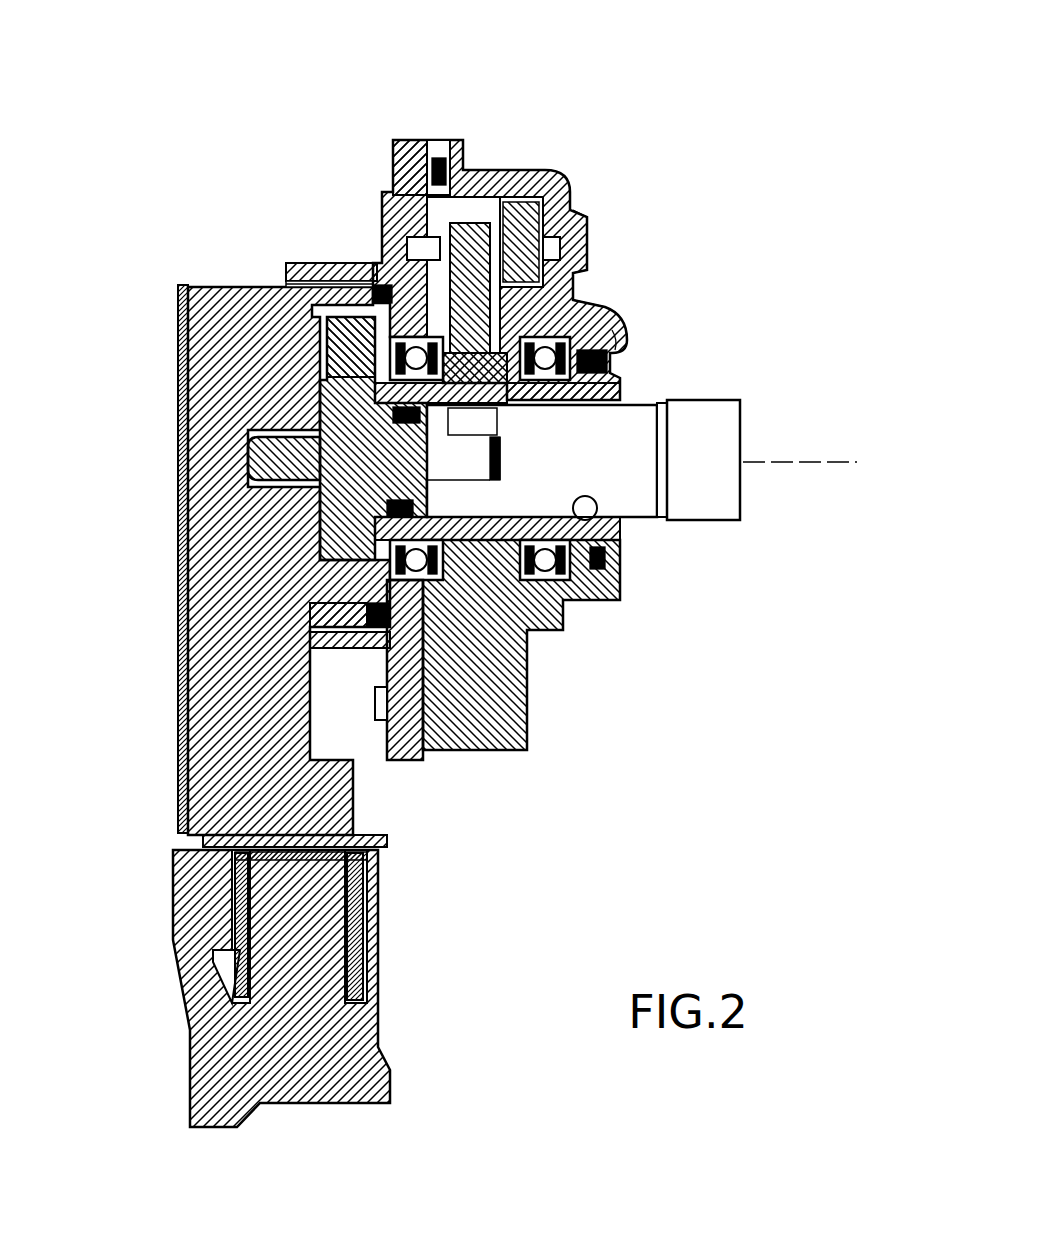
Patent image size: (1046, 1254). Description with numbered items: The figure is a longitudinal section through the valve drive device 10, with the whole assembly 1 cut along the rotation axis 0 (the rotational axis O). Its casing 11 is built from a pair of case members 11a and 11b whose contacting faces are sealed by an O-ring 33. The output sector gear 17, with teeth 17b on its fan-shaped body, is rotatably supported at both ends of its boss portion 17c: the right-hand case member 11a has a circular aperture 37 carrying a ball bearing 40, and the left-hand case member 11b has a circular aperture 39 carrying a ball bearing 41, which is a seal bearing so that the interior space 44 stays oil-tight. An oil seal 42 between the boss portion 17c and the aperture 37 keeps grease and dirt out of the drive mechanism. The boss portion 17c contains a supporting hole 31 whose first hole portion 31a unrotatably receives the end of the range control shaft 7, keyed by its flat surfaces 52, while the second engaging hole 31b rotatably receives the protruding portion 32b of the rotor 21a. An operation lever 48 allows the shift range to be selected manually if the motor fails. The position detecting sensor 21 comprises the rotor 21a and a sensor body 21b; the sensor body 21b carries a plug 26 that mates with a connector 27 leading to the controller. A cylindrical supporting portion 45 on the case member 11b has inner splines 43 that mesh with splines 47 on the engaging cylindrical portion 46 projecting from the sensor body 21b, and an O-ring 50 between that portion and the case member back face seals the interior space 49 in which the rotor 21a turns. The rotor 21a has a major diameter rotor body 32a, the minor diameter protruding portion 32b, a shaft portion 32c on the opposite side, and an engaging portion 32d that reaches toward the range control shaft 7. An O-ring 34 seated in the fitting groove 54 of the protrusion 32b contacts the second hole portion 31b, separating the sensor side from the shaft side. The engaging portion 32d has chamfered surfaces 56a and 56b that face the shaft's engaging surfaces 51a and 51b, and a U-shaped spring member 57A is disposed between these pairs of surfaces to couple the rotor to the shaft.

The valve timing control apparatus 1 is at (643, 77).
The rotation axis 0 is at (808, 465).
The range control shaft 7 is at (626, 483).
The valve drive device 10 is at (438, 775).
The casing 11 is at (444, 103).
The case member 11a is at (462, 136).
The case member 11b is at (412, 140).
The output sector gear 17 is at (585, 300).
The teeth 17b is at (540, 185).
The boss portion 17c is at (625, 395).
The position detecting sensor 21 is at (222, 560).
The rotor 21a is at (240, 388).
The sensor body 21b is at (182, 327).
The plug 26 is at (378, 905).
The connector 27 is at (378, 955).
The supporting hole 31 is at (512, 633).
The first hole portion 31a is at (595, 585).
The second engaging hole 31b is at (557, 610).
The rotor body 32a is at (240, 428).
The protruding portion 32b is at (240, 560).
The shaft portion 32c is at (240, 477).
The engaging portion 32d is at (488, 548).
The O-ring 33 is at (470, 197).
The O-ring 34 is at (345, 628).
The circular aperture 37 is at (620, 372).
The circular aperture 39 is at (378, 345).
The ball bearing 40 is at (600, 325).
The ball bearing 41 is at (395, 235).
The oil seal 42 is at (620, 330).
The splines 43 is at (293, 281).
The interior space 44 is at (520, 180).
The cylindrical supporting portion 45 is at (310, 281).
The engaging cylindrical portion 46 is at (330, 263).
The splines 47 is at (327, 373).
The operation lever 48 is at (560, 196).
The interior space 49 is at (205, 650).
The O-ring 50 is at (378, 285).
The engaging surface 51a is at (670, 437).
The engaging surface 51b is at (440, 562).
The flat surfaces 52 is at (505, 400).
The fitting groove 54 is at (250, 520).
The engaging surface 56a is at (472, 421).
The engaging surface 56b is at (492, 480).
The spring member 57A is at (500, 450).